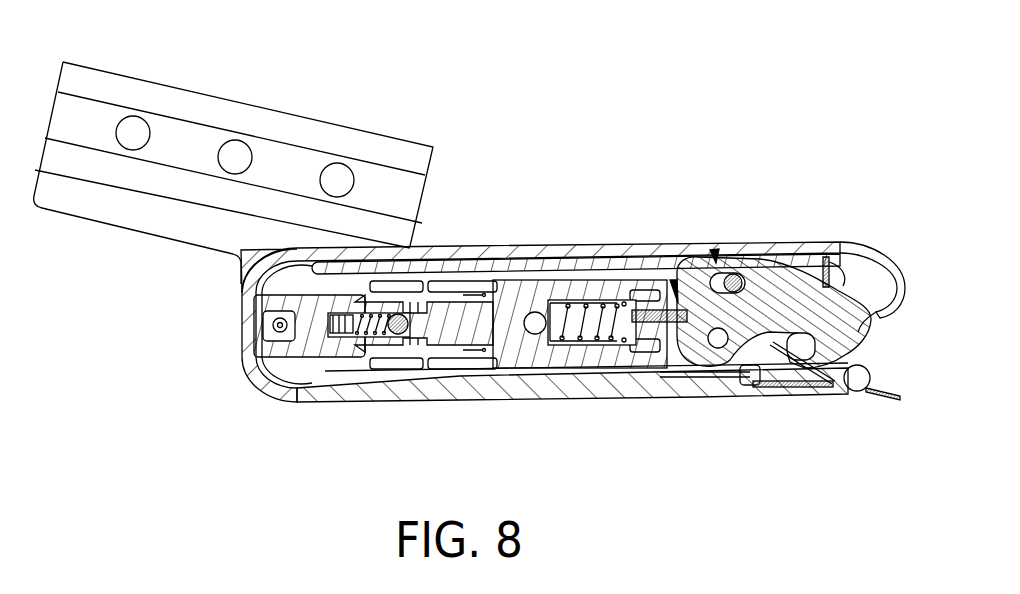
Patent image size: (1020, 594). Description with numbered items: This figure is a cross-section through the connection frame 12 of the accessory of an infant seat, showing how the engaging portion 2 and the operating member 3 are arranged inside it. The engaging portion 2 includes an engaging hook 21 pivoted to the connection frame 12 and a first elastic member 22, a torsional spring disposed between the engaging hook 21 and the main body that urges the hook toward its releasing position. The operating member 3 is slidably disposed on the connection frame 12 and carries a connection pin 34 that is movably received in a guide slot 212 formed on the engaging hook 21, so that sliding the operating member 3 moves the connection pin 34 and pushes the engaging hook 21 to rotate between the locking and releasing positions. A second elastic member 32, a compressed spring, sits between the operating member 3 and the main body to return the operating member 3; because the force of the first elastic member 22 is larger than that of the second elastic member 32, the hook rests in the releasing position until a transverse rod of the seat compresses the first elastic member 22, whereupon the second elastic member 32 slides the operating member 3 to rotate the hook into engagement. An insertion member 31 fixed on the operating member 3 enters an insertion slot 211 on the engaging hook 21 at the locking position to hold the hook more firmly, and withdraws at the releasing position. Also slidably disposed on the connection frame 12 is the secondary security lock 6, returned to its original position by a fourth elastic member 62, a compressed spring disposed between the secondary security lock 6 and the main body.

The connection frame 12 is at (260, 127).
The operating member 3 is at (578, 288).
The insertion slot 211 is at (672, 282).
The guide slot 212 is at (714, 252).
The connection pin 34 is at (737, 280).
The secondary security lock 6 is at (318, 348).
The fourth elastic member 62 is at (377, 338).
The second elastic member 32 is at (581, 340).
The insertion member 31 is at (660, 357).
The engaging hook 21 is at (722, 358).
The first elastic member 22 is at (803, 363).
The engaging portion 2 is at (762, 338).